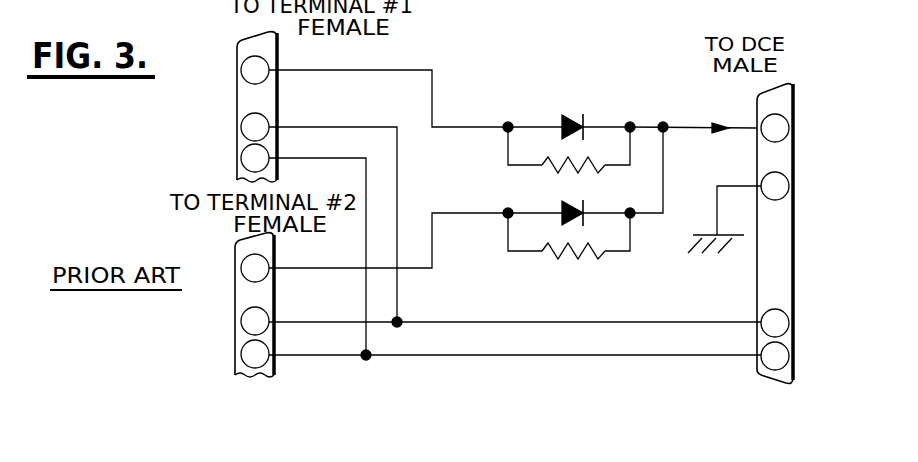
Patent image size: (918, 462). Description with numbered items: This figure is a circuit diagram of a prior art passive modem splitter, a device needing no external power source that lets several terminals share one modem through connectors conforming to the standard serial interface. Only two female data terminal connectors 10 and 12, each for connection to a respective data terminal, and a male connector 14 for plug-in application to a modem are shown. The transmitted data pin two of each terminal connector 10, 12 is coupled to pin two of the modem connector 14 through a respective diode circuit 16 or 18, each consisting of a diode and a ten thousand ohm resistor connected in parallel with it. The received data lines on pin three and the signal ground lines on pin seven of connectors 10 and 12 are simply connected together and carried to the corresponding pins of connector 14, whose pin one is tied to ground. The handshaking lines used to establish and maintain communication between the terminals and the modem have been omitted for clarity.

The connector 10 is at (278, 92).
The connector 12 is at (265, 296).
The connector 14 is at (757, 285).
The diode circuit 16 is at (569, 140).
The diode circuit 18 is at (590, 247).